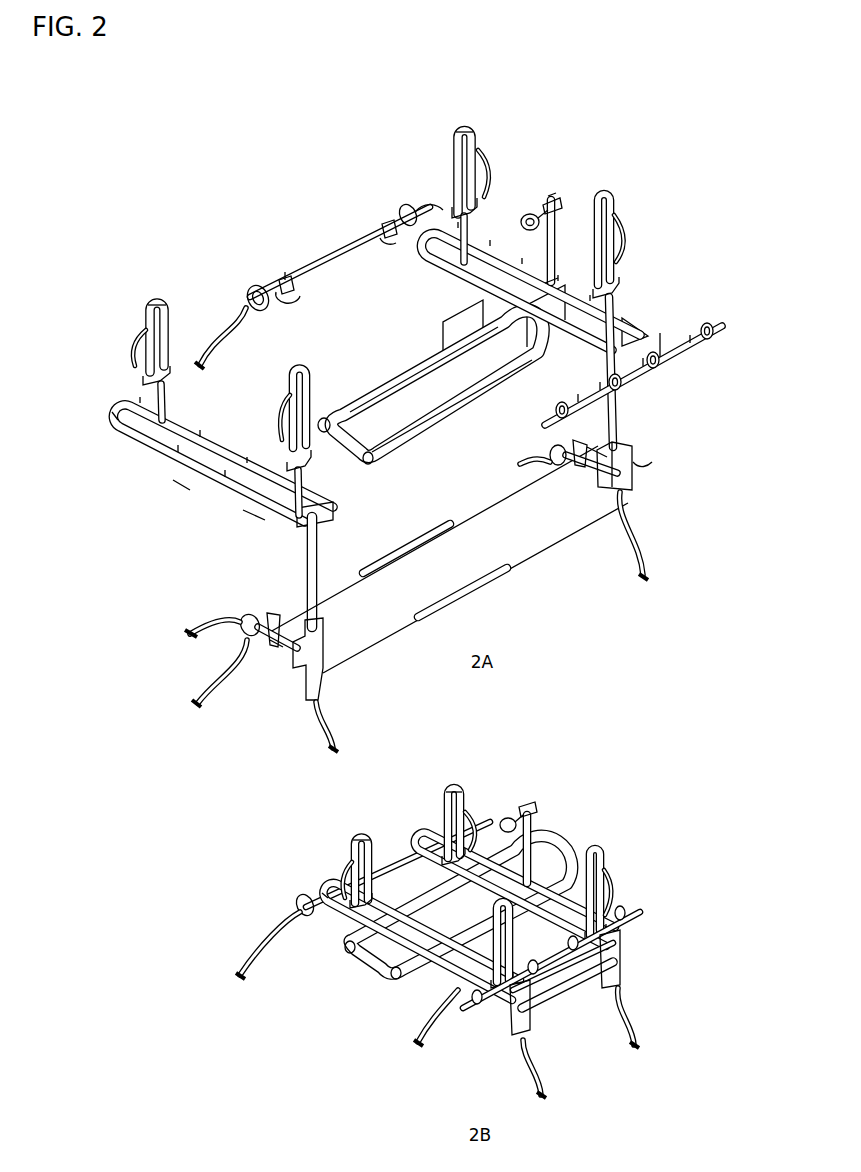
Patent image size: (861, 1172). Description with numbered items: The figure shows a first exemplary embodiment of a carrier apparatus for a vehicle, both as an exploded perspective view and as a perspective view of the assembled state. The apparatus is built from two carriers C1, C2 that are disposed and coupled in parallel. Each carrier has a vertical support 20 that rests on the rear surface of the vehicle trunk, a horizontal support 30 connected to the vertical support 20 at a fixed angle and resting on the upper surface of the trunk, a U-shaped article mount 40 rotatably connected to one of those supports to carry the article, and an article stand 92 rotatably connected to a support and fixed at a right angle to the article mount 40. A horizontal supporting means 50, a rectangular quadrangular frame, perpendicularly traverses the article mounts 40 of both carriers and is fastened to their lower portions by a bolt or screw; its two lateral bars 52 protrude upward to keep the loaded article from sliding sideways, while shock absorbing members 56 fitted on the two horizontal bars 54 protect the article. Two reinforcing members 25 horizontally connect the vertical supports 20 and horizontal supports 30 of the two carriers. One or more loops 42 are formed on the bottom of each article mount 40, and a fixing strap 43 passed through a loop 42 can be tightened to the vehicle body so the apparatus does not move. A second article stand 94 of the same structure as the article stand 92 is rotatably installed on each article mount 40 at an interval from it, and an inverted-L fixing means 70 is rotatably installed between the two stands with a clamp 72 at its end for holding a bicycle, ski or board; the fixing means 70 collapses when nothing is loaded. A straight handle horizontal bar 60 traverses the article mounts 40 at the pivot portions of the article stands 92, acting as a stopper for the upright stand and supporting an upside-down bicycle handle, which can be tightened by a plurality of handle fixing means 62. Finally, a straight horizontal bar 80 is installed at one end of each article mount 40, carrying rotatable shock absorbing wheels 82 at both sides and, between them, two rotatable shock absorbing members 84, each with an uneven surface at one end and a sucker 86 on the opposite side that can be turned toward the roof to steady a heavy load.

The vertical support 20 is at (301, 671).
The reinforcing member 25 is at (430, 540).
The horizontal support 30 is at (262, 646).
The article mount 40 is at (463, 280).
The loop 42 is at (133, 440).
The fixing strap 43 is at (237, 334).
The horizontal supporting means 50 is at (397, 374).
The lateral bar 52 is at (345, 440).
The horizontal bar 54 is at (384, 394).
The shock absorbing member 56 is at (390, 453).
The handle horizontal bar 60 is at (720, 334).
The handle fixing means 62 is at (708, 339).
The fixing means 70 is at (562, 198).
The clamp 72 is at (527, 230).
The horizontal bar 80 is at (318, 251).
The wheel 82 is at (254, 291).
The shock absorbing member 84 is at (285, 281).
The sucker 86 is at (297, 298).
The article stand 92 is at (616, 197).
The second article stand 94 is at (473, 133).
The carrier C1 is at (156, 294).
The carrier C2 is at (459, 129).